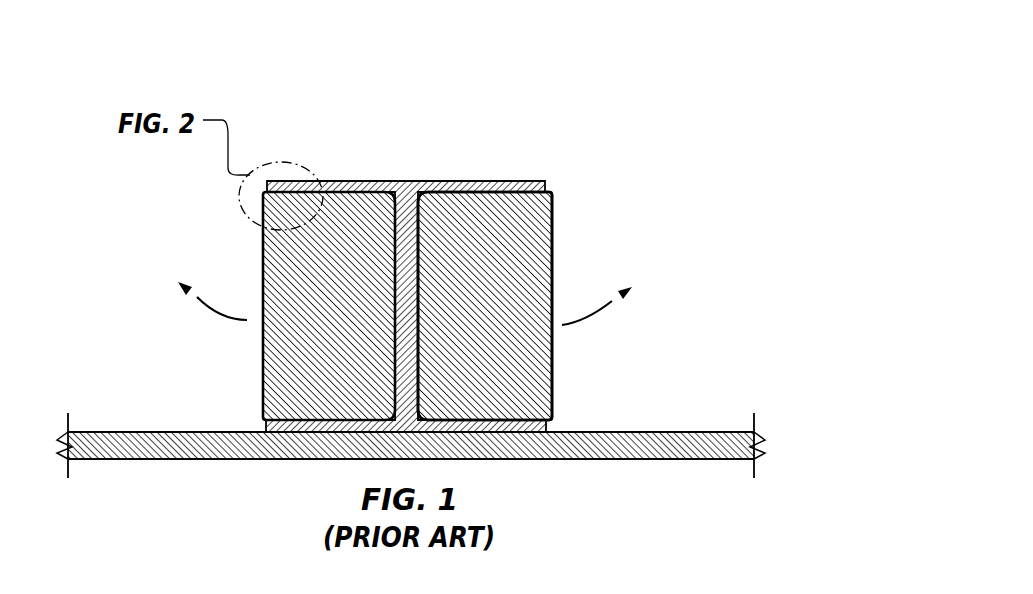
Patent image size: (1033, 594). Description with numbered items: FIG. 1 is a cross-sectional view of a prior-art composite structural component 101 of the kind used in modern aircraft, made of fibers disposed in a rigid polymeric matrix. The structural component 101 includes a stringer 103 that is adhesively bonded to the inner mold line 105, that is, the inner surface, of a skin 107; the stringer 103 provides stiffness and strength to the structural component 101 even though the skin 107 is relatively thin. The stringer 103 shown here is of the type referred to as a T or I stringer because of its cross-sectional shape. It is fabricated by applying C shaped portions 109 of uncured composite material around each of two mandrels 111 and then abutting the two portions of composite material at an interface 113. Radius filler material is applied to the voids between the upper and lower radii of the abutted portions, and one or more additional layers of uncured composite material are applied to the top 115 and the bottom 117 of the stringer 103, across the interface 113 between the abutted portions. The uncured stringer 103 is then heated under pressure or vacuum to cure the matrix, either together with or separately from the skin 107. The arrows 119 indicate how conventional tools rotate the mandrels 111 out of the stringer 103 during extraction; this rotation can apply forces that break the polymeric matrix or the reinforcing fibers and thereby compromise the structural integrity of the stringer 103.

The structural component 101 is at (430, 270).
The stringer 103 is at (474, 175).
The inner mold line 105 is at (133, 437).
The skin 107 is at (645, 447).
The C shaped portion 109 is at (545, 181).
The mandrel 111 is at (273, 360).
The interface 113 is at (413, 182).
The top 115 is at (368, 182).
The bottom 117 is at (312, 427).
The arrows 119 is at (205, 310).